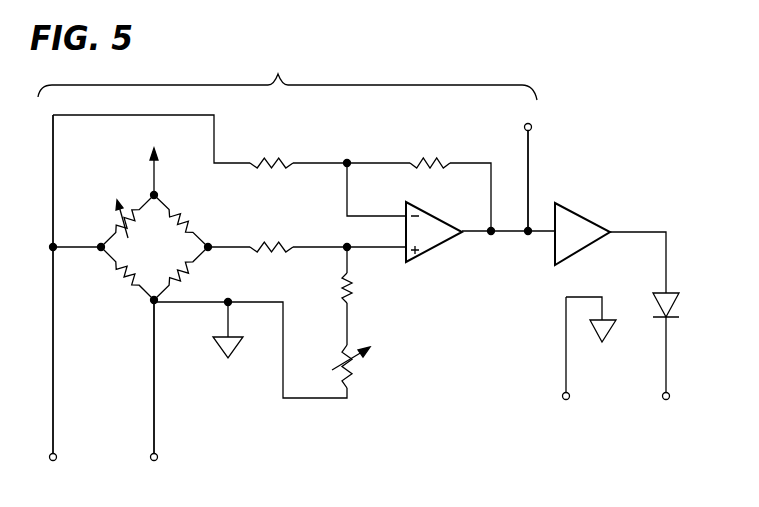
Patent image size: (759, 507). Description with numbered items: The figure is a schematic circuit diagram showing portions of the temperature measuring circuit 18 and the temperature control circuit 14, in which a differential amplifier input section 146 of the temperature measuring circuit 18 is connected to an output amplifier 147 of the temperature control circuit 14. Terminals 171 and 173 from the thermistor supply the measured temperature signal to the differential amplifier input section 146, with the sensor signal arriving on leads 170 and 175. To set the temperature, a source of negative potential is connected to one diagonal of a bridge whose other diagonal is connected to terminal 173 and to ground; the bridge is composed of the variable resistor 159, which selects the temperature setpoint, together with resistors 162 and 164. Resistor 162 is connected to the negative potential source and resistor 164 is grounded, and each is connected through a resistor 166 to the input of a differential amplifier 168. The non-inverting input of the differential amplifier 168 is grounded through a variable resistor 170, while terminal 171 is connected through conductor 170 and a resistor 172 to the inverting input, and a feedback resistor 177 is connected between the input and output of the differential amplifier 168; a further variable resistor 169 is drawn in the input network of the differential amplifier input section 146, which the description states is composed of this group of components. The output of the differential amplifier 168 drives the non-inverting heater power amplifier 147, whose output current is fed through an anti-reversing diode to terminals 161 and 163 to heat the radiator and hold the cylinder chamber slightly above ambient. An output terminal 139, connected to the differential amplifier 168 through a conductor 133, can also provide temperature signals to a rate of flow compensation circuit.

The temperature control circuit 14 is at (640, 173).
The temperature measuring circuit 18 is at (220, 79).
The conductor 133 is at (531, 170).
The output terminal 139 is at (532, 124).
The differential amplifier input section 146 is at (287, 76).
The output amplifier 147 is at (577, 216).
The variable resistor 159 is at (115, 229).
The terminal 161 is at (669, 398).
The resistor 162 is at (188, 221).
The terminal 163 is at (569, 398).
The resistor 164 is at (190, 273).
The resistor 166 is at (274, 242).
The differential amplifier 168 is at (440, 243).
The potentiometer 169 is at (352, 372).
The variable resistor 170 is at (54, 393).
The terminal 171 is at (57, 459).
The resistor 172 is at (277, 158).
The terminal 173 is at (158, 459).
The lead 175 is at (155, 401).
The feedback resistor 177 is at (437, 158).